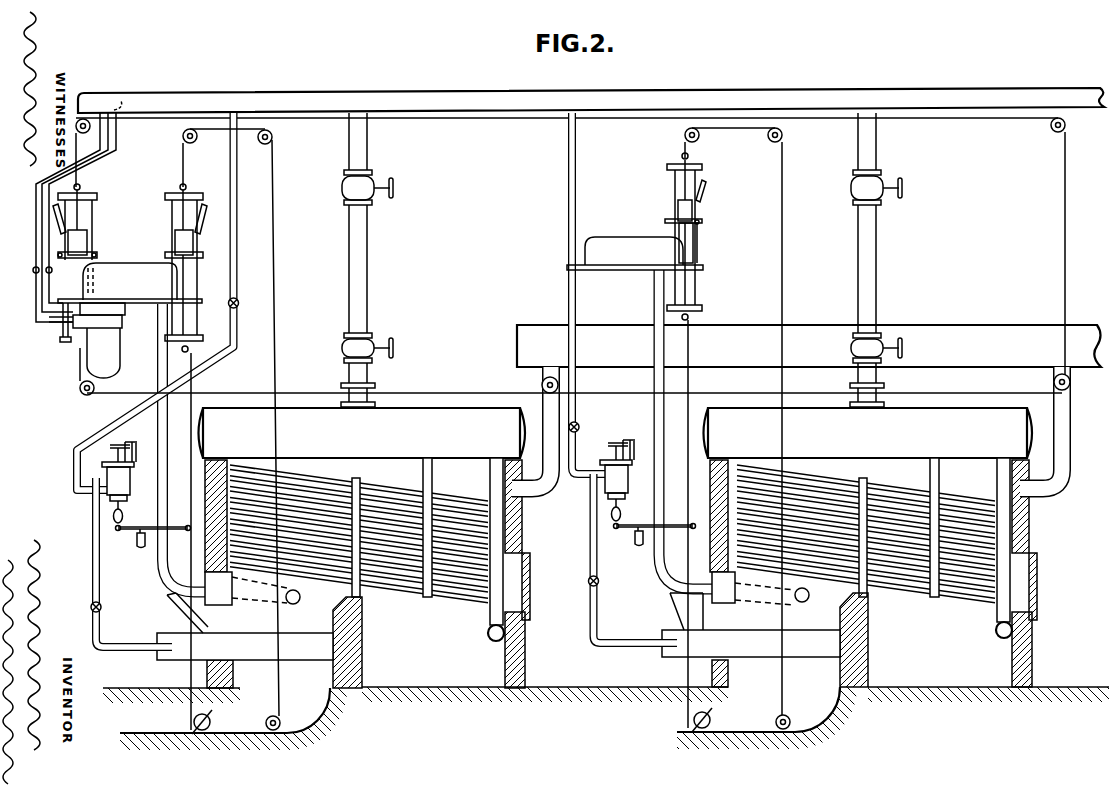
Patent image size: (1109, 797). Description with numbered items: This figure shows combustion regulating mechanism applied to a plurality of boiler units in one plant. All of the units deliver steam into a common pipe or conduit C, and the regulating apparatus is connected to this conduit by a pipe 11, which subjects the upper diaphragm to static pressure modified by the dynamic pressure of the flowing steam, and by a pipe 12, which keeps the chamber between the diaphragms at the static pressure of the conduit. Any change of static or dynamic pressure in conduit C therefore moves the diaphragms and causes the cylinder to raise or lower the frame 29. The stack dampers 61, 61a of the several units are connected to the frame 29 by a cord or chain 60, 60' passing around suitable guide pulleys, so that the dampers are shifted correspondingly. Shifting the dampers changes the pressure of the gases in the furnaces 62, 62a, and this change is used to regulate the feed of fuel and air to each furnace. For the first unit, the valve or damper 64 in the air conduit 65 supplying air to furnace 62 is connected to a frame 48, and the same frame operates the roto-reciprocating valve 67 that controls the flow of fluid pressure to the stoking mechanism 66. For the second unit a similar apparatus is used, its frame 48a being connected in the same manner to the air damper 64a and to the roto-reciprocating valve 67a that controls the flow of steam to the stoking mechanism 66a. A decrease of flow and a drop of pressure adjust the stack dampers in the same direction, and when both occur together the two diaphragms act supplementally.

The pipe or conduit C is at (450, 93).
The pipe 11 is at (42, 216).
The pipe 12 is at (36, 240).
The frame 29 is at (95, 227).
The frame 48 is at (198, 320).
The frame 48a is at (701, 289).
The cord or chain 60 is at (631, 470).
The tank 60' is at (438, 135).
The stack damper 61 is at (542, 383).
The stack damper 61a is at (1053, 375).
The furnace 62 is at (275, 602).
The furnace 62a is at (781, 605).
The valve or damper 64 is at (194, 728).
The air damper 64a is at (694, 723).
The air conduit 65 is at (606, 671).
The stoking mechanism 66 is at (181, 608).
The stoking mechanism 66a is at (670, 605).
The roto-reciprocating valve mechanism 67 is at (130, 488).
The roto-reciprocating valve 67a is at (612, 482).